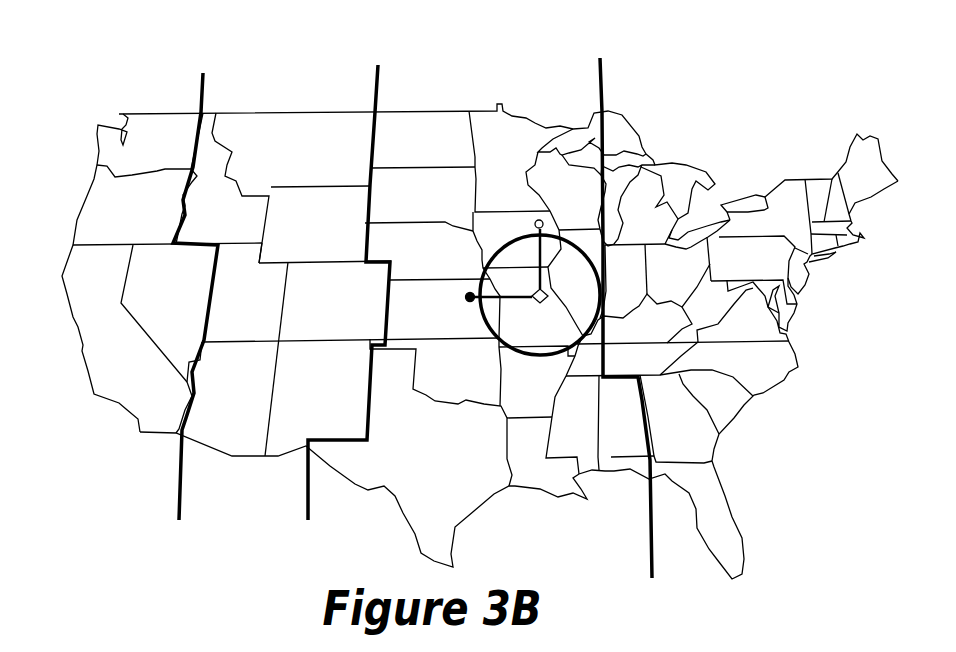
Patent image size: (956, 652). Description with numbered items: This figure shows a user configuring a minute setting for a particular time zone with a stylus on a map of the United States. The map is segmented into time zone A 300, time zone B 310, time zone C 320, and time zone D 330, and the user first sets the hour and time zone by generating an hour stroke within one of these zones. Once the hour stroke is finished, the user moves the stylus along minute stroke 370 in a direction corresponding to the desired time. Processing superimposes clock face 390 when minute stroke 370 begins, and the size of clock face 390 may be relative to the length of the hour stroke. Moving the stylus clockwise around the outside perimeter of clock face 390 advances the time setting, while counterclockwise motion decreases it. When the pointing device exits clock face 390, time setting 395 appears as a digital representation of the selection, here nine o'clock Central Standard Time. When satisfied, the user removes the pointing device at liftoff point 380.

The time zone A 300 is at (149, 228).
The time zone B 310 is at (346, 271).
The time zone C 320 is at (481, 269).
The time zone D 330 is at (519, 298).
The minute stroke 370 is at (482, 266).
The liftoff point 380 is at (487, 212).
The clock face 390 is at (491, 290).
The time setting 395 is at (450, 440).